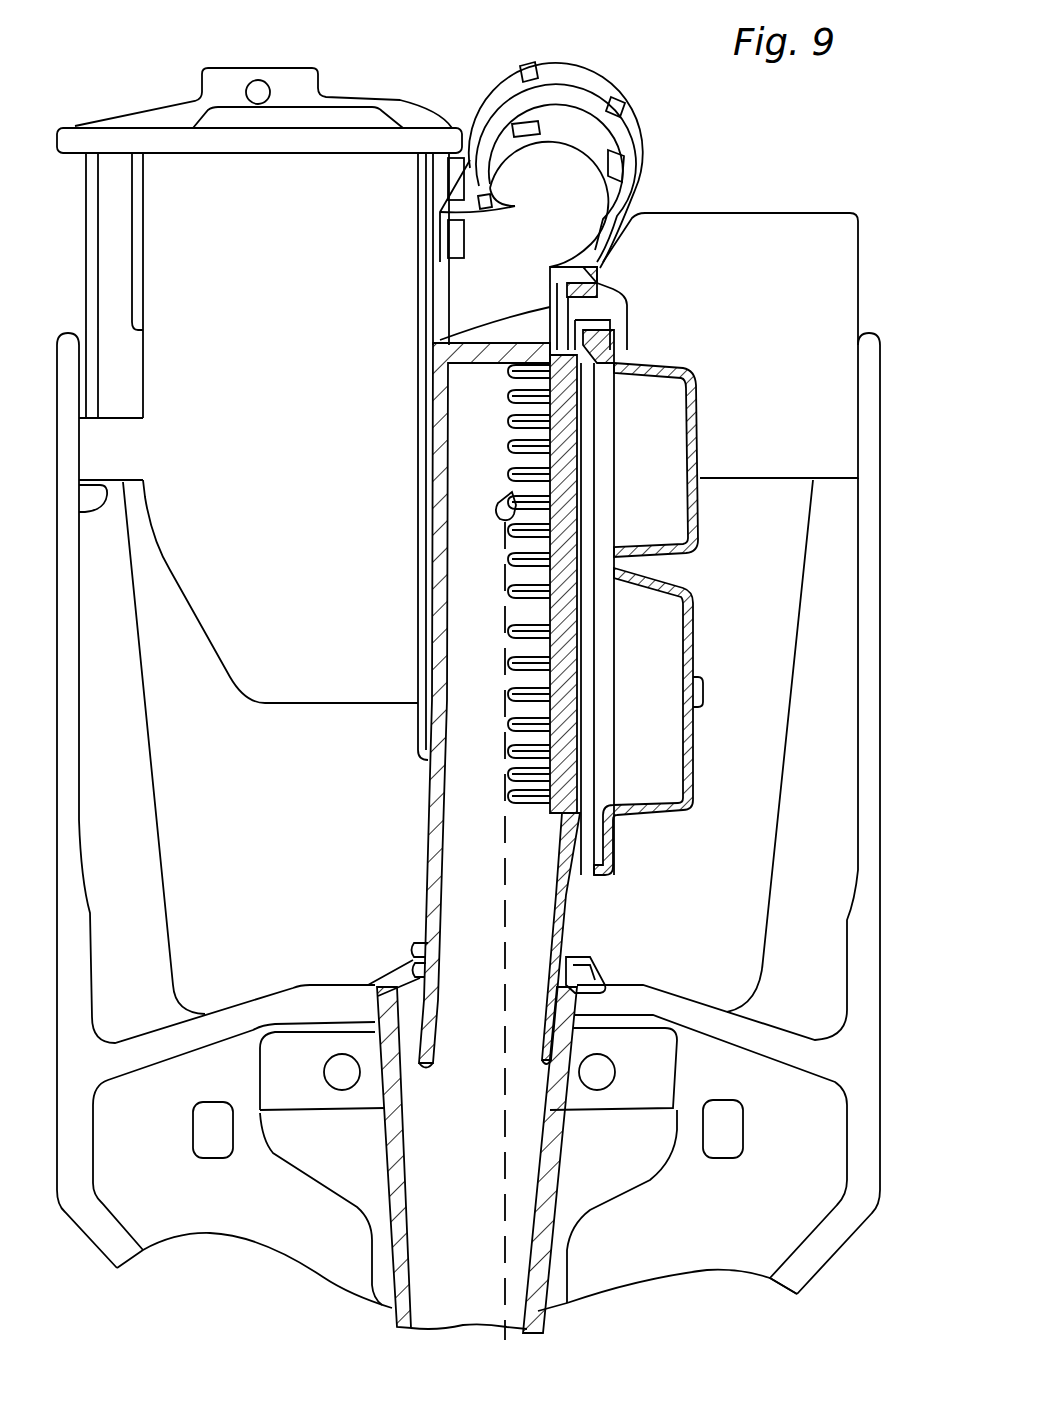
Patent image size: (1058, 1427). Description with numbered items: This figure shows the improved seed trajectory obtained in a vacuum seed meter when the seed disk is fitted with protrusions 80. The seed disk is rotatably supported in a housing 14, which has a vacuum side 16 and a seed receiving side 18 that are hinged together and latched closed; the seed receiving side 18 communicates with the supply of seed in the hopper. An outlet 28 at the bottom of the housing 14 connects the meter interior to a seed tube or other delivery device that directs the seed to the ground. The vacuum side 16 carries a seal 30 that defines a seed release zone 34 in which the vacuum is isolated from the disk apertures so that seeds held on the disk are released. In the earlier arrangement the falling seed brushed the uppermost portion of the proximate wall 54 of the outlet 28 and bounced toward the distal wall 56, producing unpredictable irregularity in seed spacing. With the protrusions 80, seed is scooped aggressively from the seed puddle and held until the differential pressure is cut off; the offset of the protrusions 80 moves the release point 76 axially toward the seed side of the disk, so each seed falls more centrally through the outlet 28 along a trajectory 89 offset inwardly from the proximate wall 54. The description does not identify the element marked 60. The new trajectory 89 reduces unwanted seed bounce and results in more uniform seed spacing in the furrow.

The housing 14 is at (731, 599).
The vacuum side 16 is at (657, 780).
The seed receiving side 18 is at (528, 838).
The outlet 28 is at (440, 1146).
The seal 30 is at (630, 322).
The seed release zone 34 is at (431, 433).
The proximate wall 54 is at (573, 937).
The distal wall 56 is at (402, 1110).
The upper fins 60 is at (547, 398).
The release point 76 is at (484, 494).
The protrusions 80 is at (499, 623).
The trajectory 89 is at (487, 927).